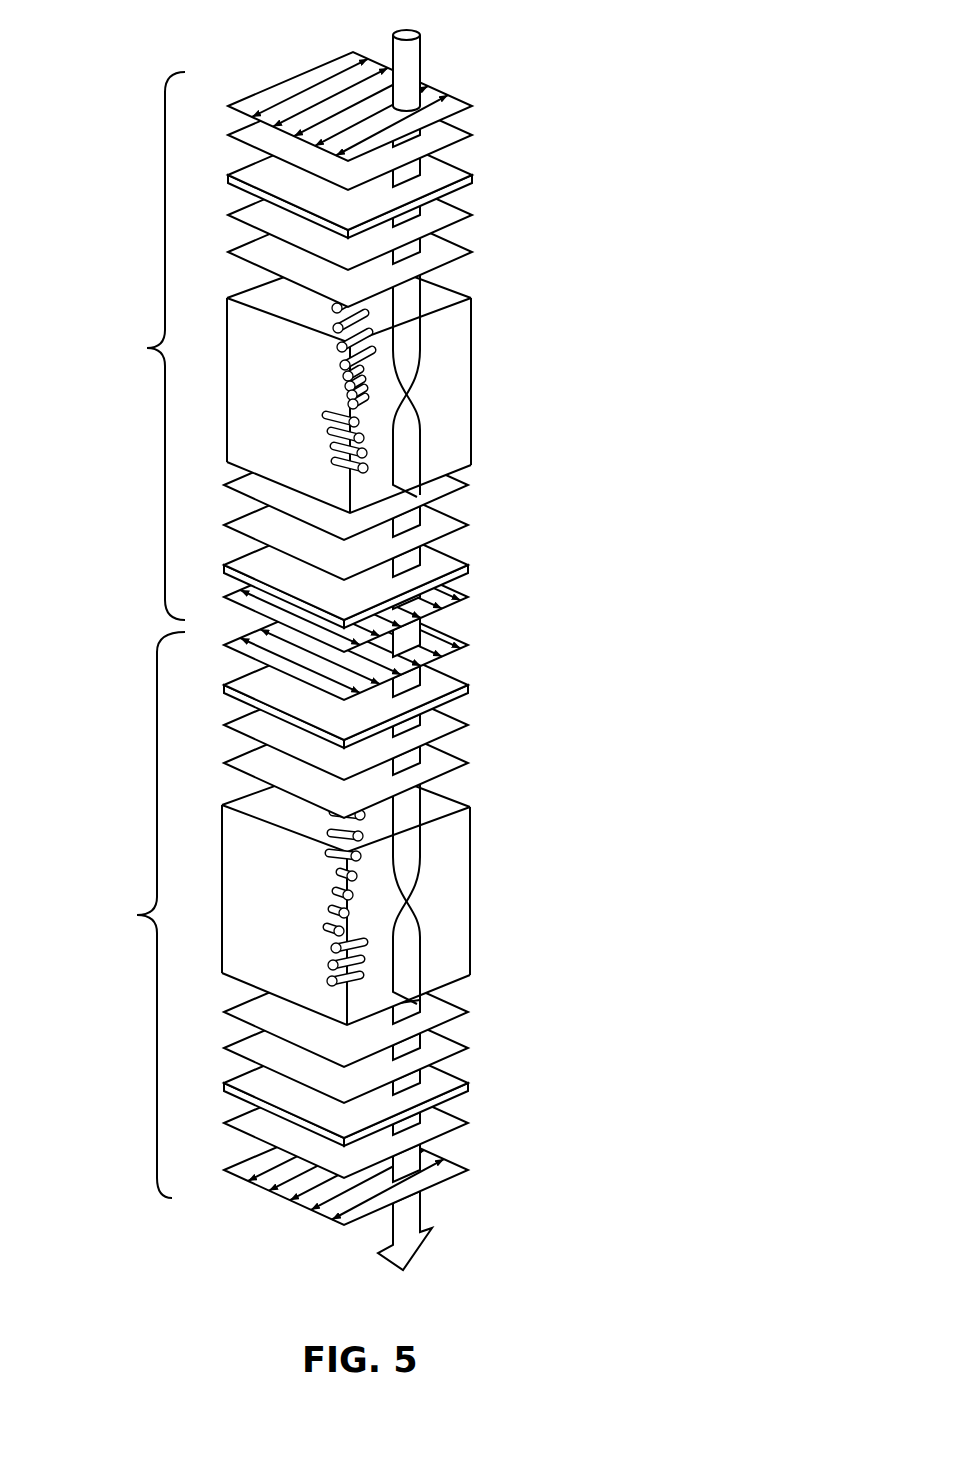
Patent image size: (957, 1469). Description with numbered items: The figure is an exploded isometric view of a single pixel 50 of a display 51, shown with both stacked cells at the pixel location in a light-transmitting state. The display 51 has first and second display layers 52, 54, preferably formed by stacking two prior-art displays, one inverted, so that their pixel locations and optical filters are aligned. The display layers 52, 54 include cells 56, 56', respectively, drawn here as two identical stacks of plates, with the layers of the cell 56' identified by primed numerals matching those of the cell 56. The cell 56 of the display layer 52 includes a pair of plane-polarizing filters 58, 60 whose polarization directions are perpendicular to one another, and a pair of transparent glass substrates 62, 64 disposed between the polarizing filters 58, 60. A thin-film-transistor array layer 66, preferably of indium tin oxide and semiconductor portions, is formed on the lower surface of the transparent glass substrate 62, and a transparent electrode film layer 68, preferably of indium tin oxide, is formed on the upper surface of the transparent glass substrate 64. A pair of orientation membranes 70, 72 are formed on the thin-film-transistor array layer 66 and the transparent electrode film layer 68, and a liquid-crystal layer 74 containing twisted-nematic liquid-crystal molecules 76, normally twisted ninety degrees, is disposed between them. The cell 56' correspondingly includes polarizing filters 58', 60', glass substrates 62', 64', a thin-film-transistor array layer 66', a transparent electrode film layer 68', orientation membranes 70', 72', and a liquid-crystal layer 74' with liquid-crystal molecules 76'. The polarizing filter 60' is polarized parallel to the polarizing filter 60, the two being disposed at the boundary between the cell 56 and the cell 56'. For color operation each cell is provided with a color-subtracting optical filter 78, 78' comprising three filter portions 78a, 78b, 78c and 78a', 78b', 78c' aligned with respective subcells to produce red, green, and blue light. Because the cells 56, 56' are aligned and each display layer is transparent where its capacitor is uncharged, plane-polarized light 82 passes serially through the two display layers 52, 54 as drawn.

The pixel 50 is at (495, 1227).
The display 51 is at (230, 63).
The first display layer 52 is at (141, 346).
The second display layer 54 is at (139, 915).
The cell 56 is at (89, 422).
The cell 56' is at (93, 838).
The plane-polarizing filter 58 is at (404, 106).
The plane-polarizing filter 58' is at (404, 1170).
The plane-polarizing filter 60 is at (401, 597).
The polarizing filter 60' is at (404, 645).
The transparent glass substrate 62 is at (404, 179).
The transparent glass substrate 62' is at (404, 1087).
The transparent glass substrate 64 is at (401, 569).
The transparent glass substrate 64' is at (404, 689).
The thin-film-transistor array layer 66 is at (404, 215).
The thin-film-transistor array layer 66' is at (404, 1048).
The transparent electrode film layer 68 is at (401, 525).
The transparent electrode film layer 68' is at (404, 725).
The orientation membrane 70 is at (404, 252).
The orientation membrane 70' is at (404, 1012).
The orientation membrane 72 is at (401, 485).
The orientation membrane 72' is at (404, 763).
The liquid-crystal layer 74 is at (402, 383).
The liquid-crystal layer 74' is at (403, 892).
The liquid-crystal molecules 76 is at (314, 383).
The liquid-crystal molecules 76' is at (303, 898).
The color-subtracting optical filter 78 is at (404, 135).
The color-subtracting optical filter 78' is at (404, 1123).
The filter portion 78a is at (155, 111).
The filter portion 78b is at (170, 145).
The filter portion 78c is at (196, 185).
The filter portion 78a' is at (165, 1099).
The filter portion 78b' is at (185, 1130).
The filter portion 78c' is at (203, 1173).
The plane-polarized light 82 is at (412, 1243).